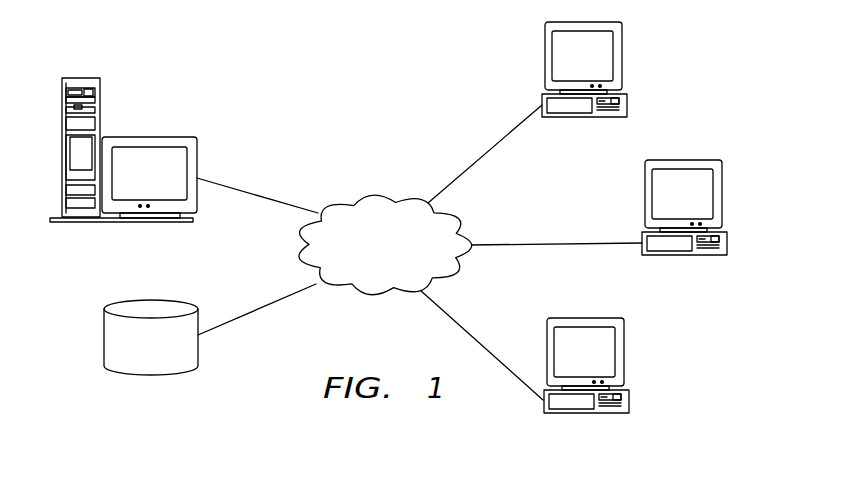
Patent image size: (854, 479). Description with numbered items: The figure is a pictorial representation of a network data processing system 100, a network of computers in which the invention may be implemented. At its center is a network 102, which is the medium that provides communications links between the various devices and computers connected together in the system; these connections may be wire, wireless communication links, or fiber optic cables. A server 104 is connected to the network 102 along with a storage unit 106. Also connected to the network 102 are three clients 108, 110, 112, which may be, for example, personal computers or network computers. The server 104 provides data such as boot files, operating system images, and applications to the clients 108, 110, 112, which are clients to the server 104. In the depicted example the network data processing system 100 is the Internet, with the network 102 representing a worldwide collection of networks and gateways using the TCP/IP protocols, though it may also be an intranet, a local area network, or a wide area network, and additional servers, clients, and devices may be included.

The network data processing system 100 is at (272, 66).
The network 102 is at (402, 267).
The server 104 is at (100, 99).
The storage unit 106 is at (103, 338).
The client 108 is at (622, 63).
The client 110 is at (722, 198).
The client 112 is at (623, 357).